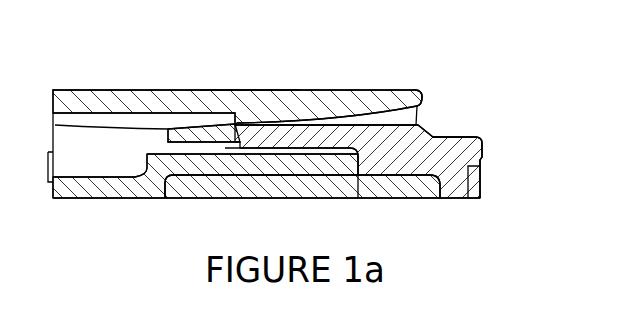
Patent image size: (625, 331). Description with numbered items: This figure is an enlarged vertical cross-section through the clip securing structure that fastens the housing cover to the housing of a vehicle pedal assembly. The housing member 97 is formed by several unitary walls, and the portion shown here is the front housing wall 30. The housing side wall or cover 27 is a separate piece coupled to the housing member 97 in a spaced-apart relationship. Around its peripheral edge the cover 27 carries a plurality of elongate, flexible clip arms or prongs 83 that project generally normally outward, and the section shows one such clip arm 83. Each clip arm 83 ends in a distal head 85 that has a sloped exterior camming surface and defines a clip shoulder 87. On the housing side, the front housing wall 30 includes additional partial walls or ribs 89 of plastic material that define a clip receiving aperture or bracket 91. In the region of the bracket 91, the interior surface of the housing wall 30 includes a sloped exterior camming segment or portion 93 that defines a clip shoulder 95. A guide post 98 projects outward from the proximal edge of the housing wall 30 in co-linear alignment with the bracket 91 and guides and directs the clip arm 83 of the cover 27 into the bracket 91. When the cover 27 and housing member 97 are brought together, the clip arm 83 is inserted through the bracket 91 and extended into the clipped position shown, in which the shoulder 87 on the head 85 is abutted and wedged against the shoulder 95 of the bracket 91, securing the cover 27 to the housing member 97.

The housing side wall or cover 27 is at (451, 126).
The front housing wall 30 is at (140, 90).
The clip arm 83 is at (312, 133).
The distal head 85 is at (222, 131).
The clip shoulder 87 is at (237, 119).
The partial walls or ribs 89 is at (213, 165).
The clip receiving aperture or bracket 91 is at (230, 151).
The sloped exterior camming segment 93 is at (302, 103).
The clip shoulder 95 is at (227, 122).
The housing member 97 is at (244, 84).
The guide post 98 is at (380, 102).